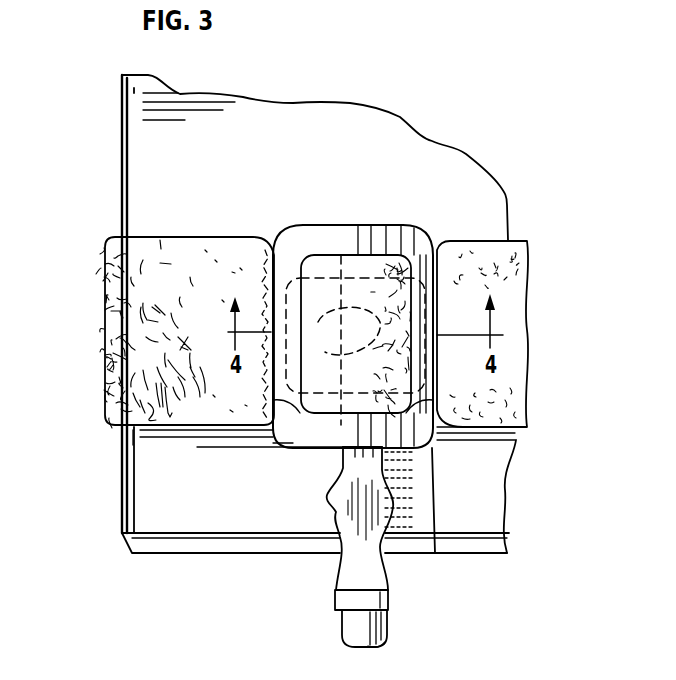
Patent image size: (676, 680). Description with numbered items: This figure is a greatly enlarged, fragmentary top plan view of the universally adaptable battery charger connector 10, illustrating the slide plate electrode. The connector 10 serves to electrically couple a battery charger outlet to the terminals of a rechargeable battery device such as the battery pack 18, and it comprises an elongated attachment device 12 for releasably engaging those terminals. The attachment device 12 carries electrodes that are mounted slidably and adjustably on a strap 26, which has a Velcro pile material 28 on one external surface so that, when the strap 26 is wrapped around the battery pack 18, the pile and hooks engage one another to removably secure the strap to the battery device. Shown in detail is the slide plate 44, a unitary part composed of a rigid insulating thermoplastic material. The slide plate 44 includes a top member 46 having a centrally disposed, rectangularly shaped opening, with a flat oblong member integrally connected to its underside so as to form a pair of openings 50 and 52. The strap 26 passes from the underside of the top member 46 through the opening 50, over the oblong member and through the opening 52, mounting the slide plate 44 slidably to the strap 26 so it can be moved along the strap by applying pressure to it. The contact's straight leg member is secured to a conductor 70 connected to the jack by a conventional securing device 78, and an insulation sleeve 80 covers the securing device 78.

The battery charger connector 10 is at (90, 248).
The attachment device 12 is at (518, 233).
The battery pack 18 is at (375, 132).
The strap 26 is at (163, 428).
The Velcro pile material 28 is at (162, 250).
The slide plate 44 is at (300, 222).
The top member 46 is at (350, 238).
The opening 50 is at (292, 447).
The opening 52 is at (435, 553).
The conductor 70 is at (388, 628).
The securing device 78 is at (333, 513).
The insulation sleeve 80 is at (390, 590).